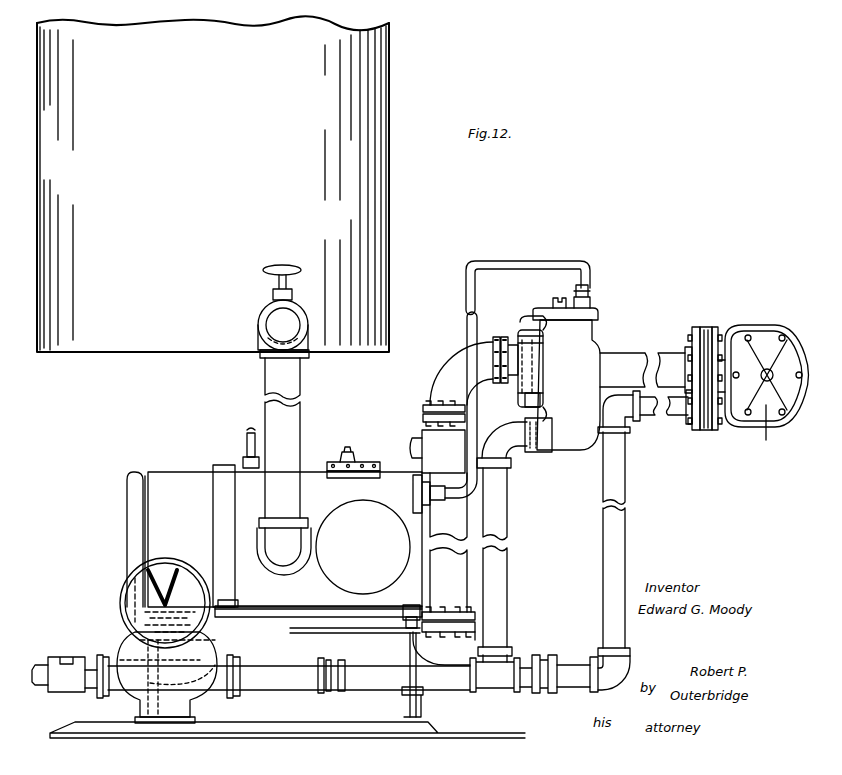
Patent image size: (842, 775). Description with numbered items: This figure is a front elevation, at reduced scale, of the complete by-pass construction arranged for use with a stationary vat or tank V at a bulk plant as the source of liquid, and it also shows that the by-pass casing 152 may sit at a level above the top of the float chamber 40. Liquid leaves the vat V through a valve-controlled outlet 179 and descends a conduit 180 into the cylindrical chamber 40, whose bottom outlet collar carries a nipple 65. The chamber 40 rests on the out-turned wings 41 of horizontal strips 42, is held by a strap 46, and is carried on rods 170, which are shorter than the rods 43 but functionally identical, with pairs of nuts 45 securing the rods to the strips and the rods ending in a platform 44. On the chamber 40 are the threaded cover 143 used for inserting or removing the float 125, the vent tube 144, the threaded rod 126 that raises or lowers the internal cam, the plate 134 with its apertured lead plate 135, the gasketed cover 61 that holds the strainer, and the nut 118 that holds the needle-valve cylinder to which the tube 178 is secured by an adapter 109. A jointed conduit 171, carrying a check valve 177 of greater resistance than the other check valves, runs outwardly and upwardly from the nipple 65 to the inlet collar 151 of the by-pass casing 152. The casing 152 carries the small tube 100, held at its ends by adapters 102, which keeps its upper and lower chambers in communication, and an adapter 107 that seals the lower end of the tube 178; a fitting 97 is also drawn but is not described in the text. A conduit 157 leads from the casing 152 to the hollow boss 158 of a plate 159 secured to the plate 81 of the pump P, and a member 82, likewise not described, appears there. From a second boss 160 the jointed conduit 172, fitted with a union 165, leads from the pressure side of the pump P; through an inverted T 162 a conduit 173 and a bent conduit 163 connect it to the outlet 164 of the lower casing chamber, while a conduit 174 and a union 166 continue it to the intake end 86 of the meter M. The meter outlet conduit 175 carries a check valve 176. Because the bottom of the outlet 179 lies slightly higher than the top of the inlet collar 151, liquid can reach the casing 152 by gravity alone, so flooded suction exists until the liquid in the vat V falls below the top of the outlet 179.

The vat V is at (115, 335).
The valve-controlled outlet 179 is at (258, 323).
The conduit 180 is at (300, 380).
The chamber 40 is at (172, 482).
The cover 143 is at (128, 515).
The strap 46 is at (220, 521).
The tube 144 is at (247, 440).
The threaded rod 126 is at (345, 452).
The plate 134 is at (366, 460).
The lead plate 135 is at (357, 480).
The cover 61 is at (363, 547).
The nut 118 is at (410, 516).
The wings 41 is at (290, 610).
The horizontal strips 42 is at (255, 613).
The nuts 45 is at (410, 612).
The vertical rods 43 is at (425, 700).
The platform 44 is at (432, 731).
The nipple 65 is at (167, 603).
The meter M is at (140, 700).
The conduit 174 is at (289, 678).
The float 125 is at (115, 652).
The intake end 86 is at (240, 700).
The union 166 is at (332, 695).
The check valve 176 is at (68, 658).
The conduit 175 is at (40, 665).
The inverted T 162 is at (500, 682).
The union 165 is at (545, 695).
The jointed conduit 172 is at (642, 412).
The second boss 160 is at (688, 424).
The conduit 173 is at (505, 512).
The bent conduit 163 is at (510, 468).
The outlet 164 is at (548, 453).
The check valve 177 is at (421, 440).
The adapter 109 is at (436, 501).
The jointed conduit 171 is at (444, 383).
The rods 170 is at (418, 640).
The tube 178 is at (498, 262).
The by-pass casing 152 is at (586, 333).
The fitting 97 is at (560, 301).
The adapter 107 is at (590, 300).
The tube 100 is at (516, 334).
The inlet collar 151 is at (543, 372).
The hollow adapter 102 is at (535, 398).
The conduit 157 is at (645, 352).
The hollow boss 158 is at (682, 346).
The plate 159 is at (697, 326).
The plate 82 is at (707, 326).
The plate 81 is at (719, 333).
The pump P is at (763, 434).